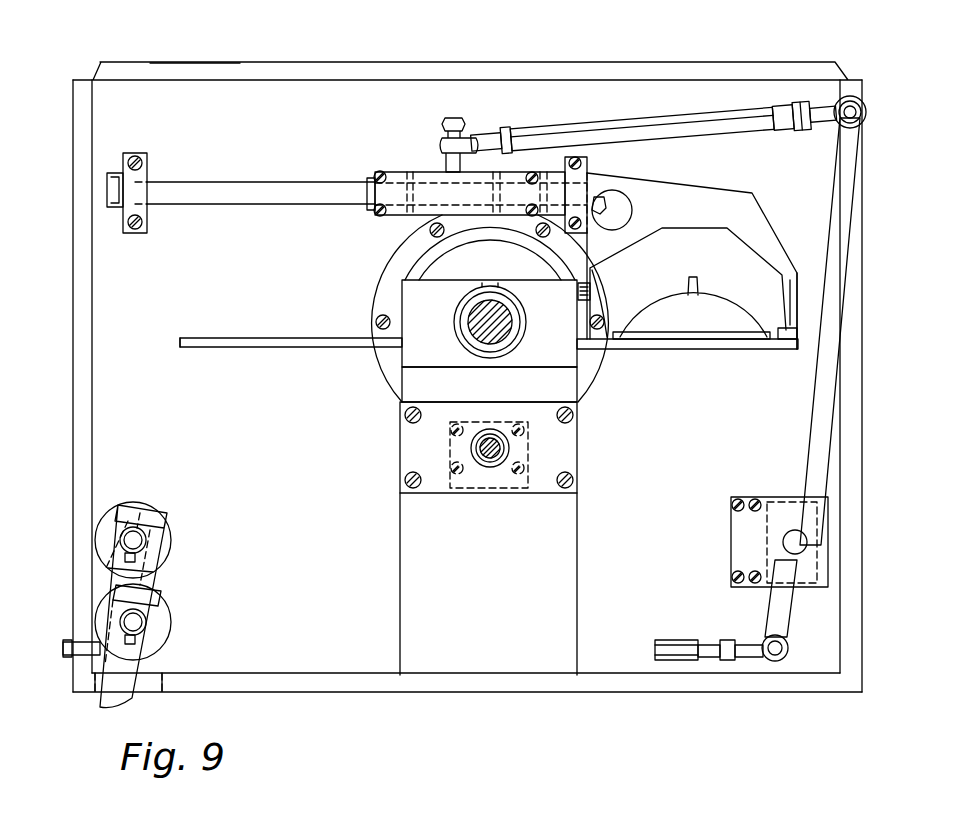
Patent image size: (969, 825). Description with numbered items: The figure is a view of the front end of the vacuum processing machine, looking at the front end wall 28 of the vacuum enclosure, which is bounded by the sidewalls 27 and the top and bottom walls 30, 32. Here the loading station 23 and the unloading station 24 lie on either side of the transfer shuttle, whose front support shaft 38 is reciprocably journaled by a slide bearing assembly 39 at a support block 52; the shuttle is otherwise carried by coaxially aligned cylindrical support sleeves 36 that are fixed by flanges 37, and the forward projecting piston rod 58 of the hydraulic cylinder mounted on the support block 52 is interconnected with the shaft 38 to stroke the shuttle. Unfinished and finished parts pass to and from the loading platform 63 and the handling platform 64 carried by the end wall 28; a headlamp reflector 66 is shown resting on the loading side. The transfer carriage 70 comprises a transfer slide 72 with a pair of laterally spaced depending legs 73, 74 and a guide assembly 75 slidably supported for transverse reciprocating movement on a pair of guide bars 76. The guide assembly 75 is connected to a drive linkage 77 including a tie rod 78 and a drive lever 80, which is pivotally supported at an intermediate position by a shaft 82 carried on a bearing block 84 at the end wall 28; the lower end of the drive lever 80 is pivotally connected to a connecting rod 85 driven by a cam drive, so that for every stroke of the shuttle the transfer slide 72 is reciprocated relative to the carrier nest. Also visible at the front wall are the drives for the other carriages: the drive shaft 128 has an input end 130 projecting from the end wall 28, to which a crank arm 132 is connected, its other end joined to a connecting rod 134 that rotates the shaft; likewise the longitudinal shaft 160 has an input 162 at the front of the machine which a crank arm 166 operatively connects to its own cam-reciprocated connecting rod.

The sidewalls 27 is at (82, 356).
The front end wall 28 is at (260, 93).
The top wall 30 is at (163, 70).
The bottom wall 32 is at (312, 686).
The transfer carriage 70 is at (436, 126).
The tie rod 78 is at (615, 133).
The drive linkage 77 is at (710, 114).
The guide bars 76 is at (200, 193).
The guide assembly 75 is at (425, 193).
The transfer slide 72 is at (693, 207).
The depending leg 73 is at (790, 290).
The depending leg 74 is at (585, 275).
The reflector 66 is at (713, 310).
The loading platform 63 is at (598, 334).
The loading station 23 is at (735, 348).
The unloading station 24 is at (297, 338).
The handling platform 64 is at (200, 338).
The support sleeves 36 is at (437, 250).
The flanges 37 is at (405, 263).
The slide bearing assembly 39 is at (455, 295).
The support shaft 38 is at (498, 318).
The support block 52 is at (415, 617).
The piston rod 58 is at (490, 457).
The crank arm 132 is at (113, 577).
The crank arm 166 is at (135, 663).
The input end 130 is at (145, 537).
The drive shaft 128 is at (142, 546).
The input 162 is at (145, 619).
The shaft 160 is at (142, 628).
The connecting rod 134 is at (68, 645).
The drive lever 80 is at (820, 402).
The bearing block 84 is at (822, 556).
The shaft 82 is at (800, 541).
The connecting rod 85 is at (678, 643).